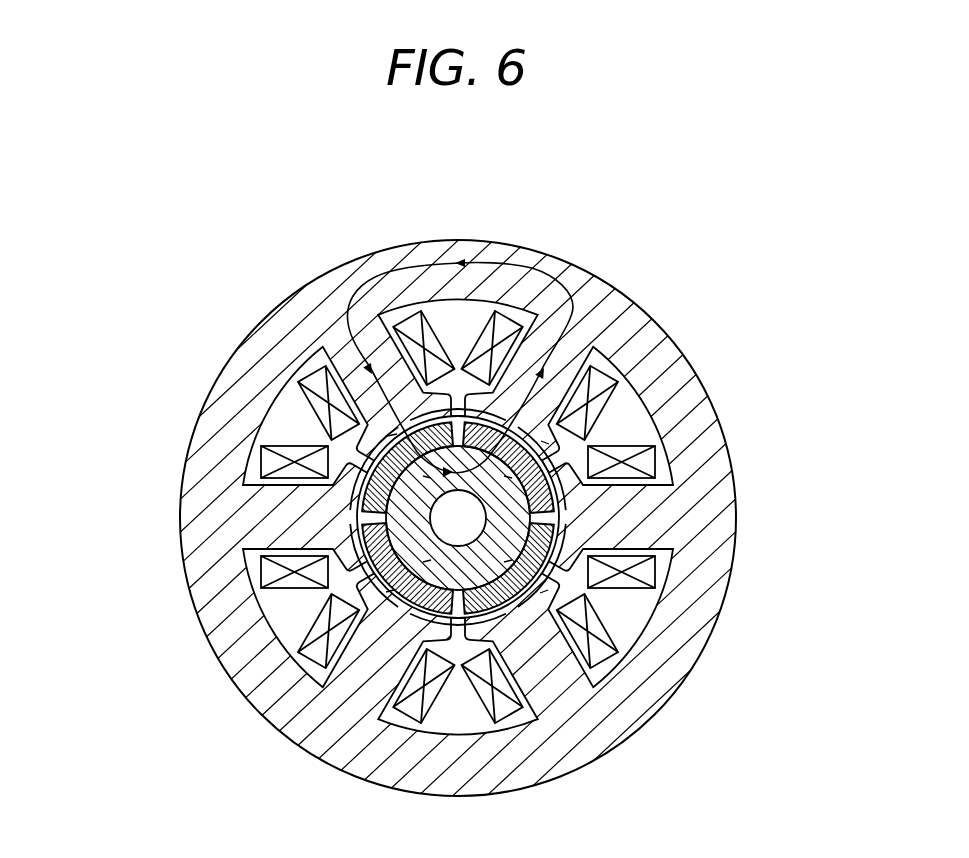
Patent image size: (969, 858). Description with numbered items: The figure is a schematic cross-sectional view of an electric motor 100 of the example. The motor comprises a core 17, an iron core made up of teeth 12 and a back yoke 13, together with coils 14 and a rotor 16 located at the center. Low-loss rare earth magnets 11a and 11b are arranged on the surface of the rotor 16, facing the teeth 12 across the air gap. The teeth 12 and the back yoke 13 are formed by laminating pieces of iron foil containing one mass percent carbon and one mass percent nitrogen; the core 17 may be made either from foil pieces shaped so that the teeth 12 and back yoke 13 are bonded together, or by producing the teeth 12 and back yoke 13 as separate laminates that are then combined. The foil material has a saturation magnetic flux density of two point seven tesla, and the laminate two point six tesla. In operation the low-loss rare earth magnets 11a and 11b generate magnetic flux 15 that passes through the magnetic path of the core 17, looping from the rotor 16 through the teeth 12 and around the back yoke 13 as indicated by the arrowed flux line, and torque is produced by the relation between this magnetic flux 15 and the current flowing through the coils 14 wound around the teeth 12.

The electric motor 100 is at (385, 215).
The low-loss rare earth magnet 11a is at (552, 497).
The low-loss rare earth magnet 11b is at (373, 467).
The teeth 12 is at (571, 357).
The back yoke 13 is at (670, 367).
The coils 14 is at (598, 410).
The magnetic flux 15 is at (531, 270).
The rotor 16 is at (400, 515).
The core 17 is at (724, 258).